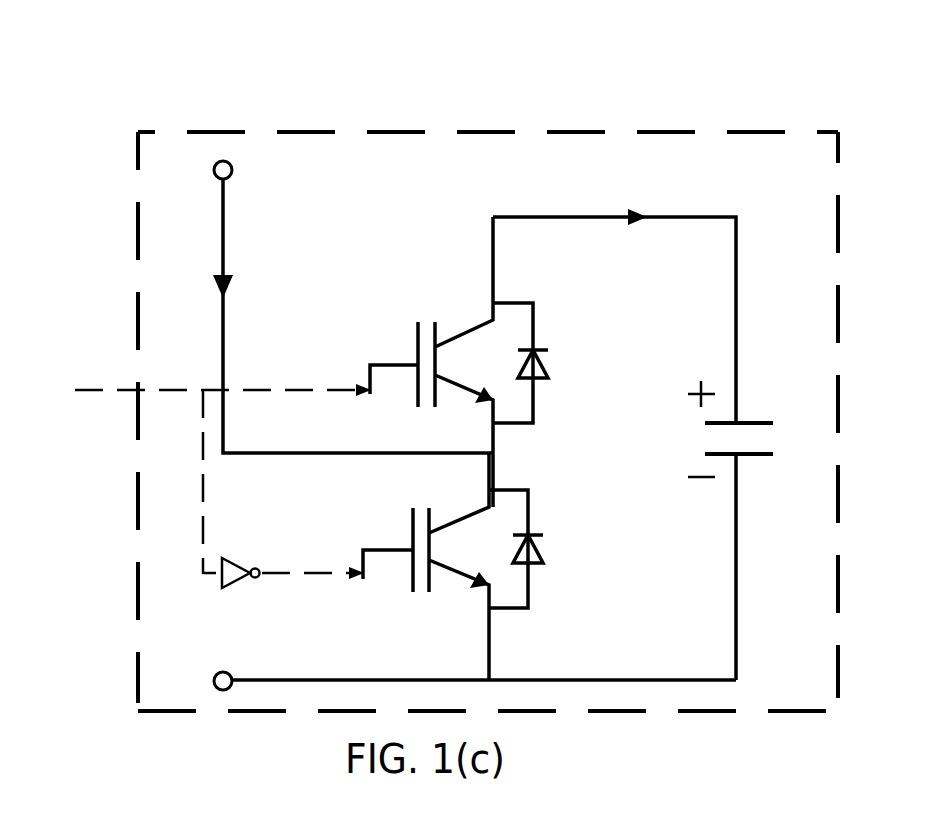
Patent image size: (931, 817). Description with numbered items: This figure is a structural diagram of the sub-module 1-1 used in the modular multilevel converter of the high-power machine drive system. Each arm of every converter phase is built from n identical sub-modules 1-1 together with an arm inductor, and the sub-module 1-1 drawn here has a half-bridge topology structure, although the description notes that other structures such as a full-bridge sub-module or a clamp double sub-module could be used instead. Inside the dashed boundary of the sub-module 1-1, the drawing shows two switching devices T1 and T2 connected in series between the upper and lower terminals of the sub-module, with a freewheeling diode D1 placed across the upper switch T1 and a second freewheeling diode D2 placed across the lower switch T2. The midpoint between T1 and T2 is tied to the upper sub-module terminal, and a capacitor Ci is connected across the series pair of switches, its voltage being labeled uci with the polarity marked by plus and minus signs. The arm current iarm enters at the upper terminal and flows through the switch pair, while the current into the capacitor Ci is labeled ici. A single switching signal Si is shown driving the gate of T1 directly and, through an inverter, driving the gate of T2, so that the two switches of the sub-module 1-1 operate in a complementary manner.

The sub-module 1-1 is at (138, 225).
The upper IGBT switch T1 is at (431, 362).
The lower IGBT switch T2 is at (424, 566).
The upper freewheeling diode D1 is at (554, 363).
The lower freewheeling diode D2 is at (554, 549).
The submodule capacitor Ci is at (763, 517).
The switching signal Si is at (199, 475).
The arm current iarm is at (353, 307).
The capacitor current ici is at (614, 285).
The capacitor voltage uci is at (671, 429).